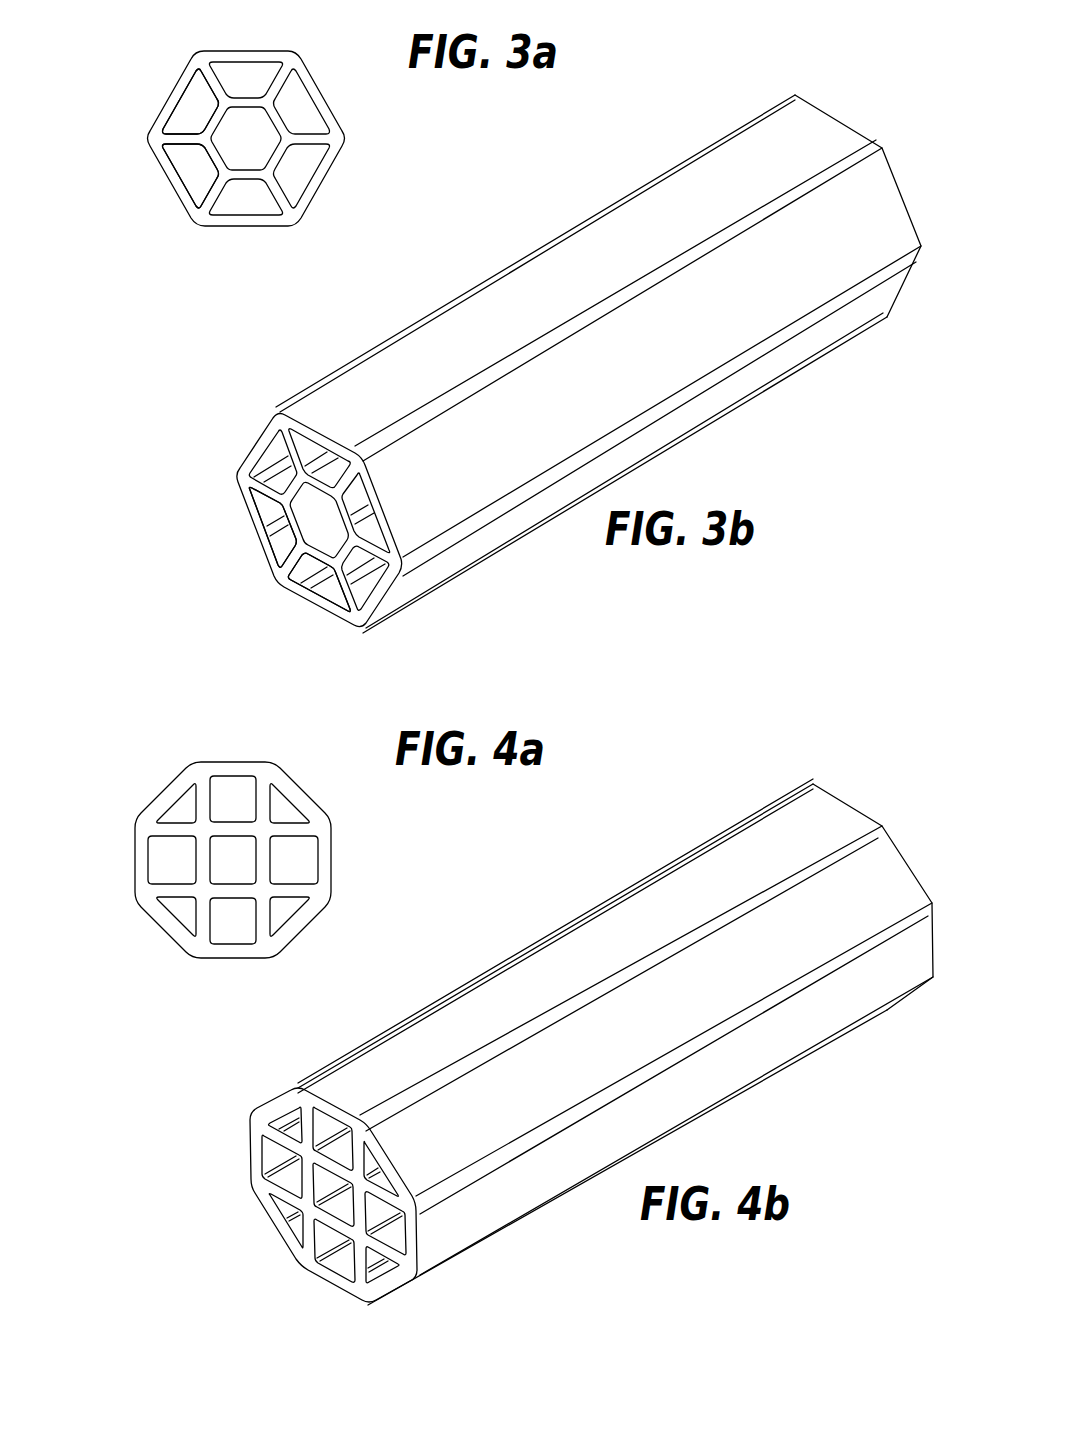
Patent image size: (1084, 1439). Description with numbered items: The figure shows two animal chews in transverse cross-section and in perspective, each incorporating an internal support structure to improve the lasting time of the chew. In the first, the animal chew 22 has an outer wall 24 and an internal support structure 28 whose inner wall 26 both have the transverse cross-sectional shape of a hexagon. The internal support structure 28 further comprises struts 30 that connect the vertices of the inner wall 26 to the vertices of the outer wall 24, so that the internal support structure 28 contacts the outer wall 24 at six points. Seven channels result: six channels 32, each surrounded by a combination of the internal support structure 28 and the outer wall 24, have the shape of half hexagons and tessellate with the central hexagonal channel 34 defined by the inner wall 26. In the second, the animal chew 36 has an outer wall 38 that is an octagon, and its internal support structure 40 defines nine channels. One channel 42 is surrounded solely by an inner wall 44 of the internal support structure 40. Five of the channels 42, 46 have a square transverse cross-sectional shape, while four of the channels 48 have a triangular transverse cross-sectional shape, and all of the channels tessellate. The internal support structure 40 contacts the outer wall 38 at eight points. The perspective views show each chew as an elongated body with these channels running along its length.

In FIG. 3A, the animal chew 22 is at (238, 148).
In FIG. 3B, the animal chew 22 is at (574, 328).
In FIG. 3A, the outer wall 24 is at (315, 85).
In FIG. 3B, the outer wall 24 is at (527, 260).
In FIG. 3A, the inner wall 26 is at (208, 158).
In FIG. 3A, the internal support structure 28 is at (183, 137).
In FIG. 3B, the internal support structure 28 is at (292, 565).
In FIG. 3A, the struts 30 is at (215, 82).
In FIG. 3A, the channels 32 is at (252, 202).
In FIG. 3A, the central hexagonal channel 34 is at (262, 147).
In FIG. 4A, the animal chew 36 is at (249, 852).
In FIG. 4B, the animal chew 36 is at (574, 1009).
In FIG. 4A, the outer wall 38 is at (298, 800).
In FIG. 4B, the outer wall 38 is at (538, 948).
In FIG. 4A, the internal support structure 40 is at (163, 828).
In FIG. 4B, the internal support structure 40 is at (295, 1212).
In FIG. 4A, the channel 42 is at (223, 867).
In FIG. 4A, the inner wall 44 is at (232, 890).
In FIG. 4A, the channels 46 is at (310, 852).
In FIG. 4A, the channels 48 is at (290, 907).